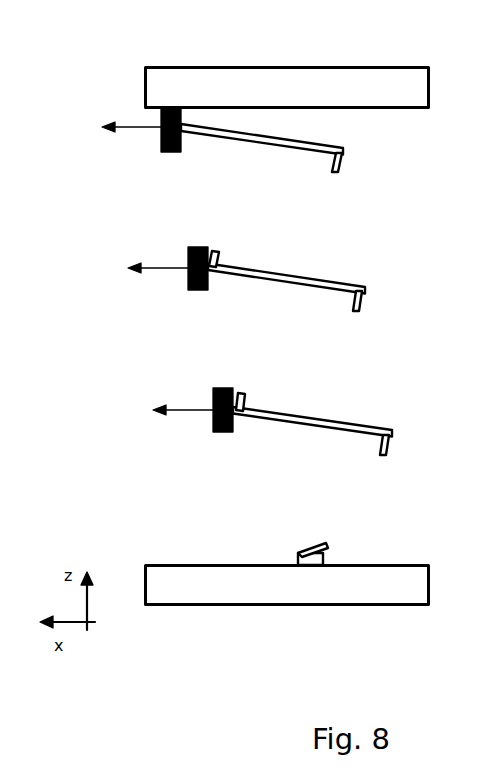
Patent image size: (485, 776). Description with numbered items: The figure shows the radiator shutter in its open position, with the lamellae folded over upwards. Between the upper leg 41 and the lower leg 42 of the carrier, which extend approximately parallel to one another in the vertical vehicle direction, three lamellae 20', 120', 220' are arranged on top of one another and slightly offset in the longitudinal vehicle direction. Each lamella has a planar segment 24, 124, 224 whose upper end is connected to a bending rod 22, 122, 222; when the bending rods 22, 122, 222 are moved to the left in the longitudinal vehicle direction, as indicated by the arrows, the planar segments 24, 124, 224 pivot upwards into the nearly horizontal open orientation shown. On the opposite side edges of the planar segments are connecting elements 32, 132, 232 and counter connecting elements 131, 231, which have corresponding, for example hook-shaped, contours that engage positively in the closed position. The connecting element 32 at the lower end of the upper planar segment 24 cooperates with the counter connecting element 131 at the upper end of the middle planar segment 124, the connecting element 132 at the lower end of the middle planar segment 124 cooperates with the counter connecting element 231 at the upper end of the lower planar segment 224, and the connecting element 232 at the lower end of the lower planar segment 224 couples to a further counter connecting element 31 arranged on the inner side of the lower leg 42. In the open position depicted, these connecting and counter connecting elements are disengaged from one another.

The upper leg 41 is at (221, 81).
The lamella 20' is at (221, 148).
The bending rod 22 is at (161, 141).
The planar segment 24 is at (249, 146).
The connecting element 32 is at (347, 161).
The lamella 120' is at (251, 275).
The bending rod 122 is at (186, 253).
The planar segment 124 is at (265, 291).
The counter connecting element 131 is at (220, 255).
The connecting element 132 is at (367, 303).
The lamella 220' is at (272, 420).
The bending rod 222 is at (212, 402).
The planar segment 224 is at (278, 429).
The counter connecting element 231 is at (249, 398).
The connecting element 232 is at (395, 443).
The lower leg 42 is at (163, 580).
The counter connecting element 31 is at (303, 550).